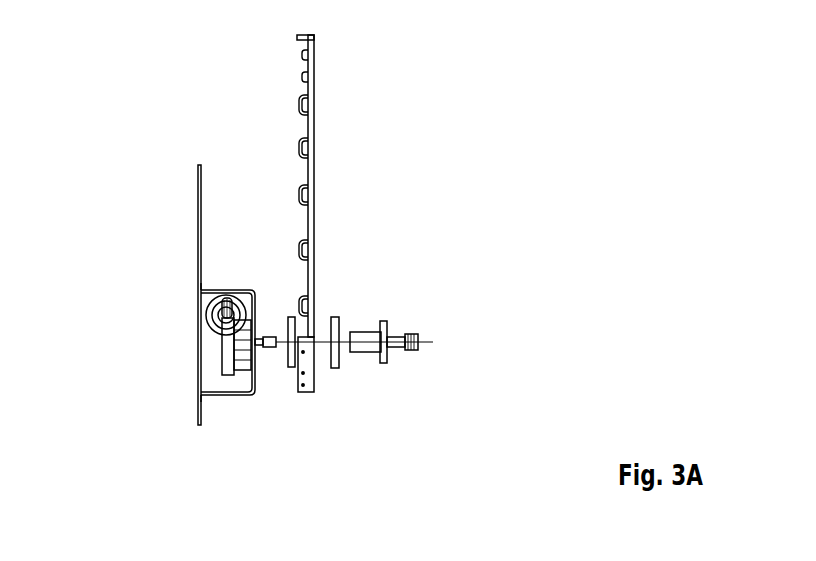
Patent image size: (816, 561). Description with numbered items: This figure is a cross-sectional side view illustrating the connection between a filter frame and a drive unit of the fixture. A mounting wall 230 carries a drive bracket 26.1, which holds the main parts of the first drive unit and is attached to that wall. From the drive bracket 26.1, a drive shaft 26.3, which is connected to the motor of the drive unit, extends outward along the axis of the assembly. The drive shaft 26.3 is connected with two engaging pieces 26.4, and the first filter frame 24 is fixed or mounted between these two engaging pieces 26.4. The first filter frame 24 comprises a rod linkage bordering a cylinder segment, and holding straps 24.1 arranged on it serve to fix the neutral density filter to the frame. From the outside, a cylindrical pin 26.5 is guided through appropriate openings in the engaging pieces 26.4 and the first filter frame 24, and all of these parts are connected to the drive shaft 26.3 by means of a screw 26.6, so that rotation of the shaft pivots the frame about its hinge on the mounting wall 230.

The mounting wall 230 is at (198, 208).
The first filter frame 24 is at (314, 127).
The holding straps 24.1 is at (305, 193).
The drive bracket 26.1 is at (227, 396).
The drive shaft 26.3 is at (268, 348).
The engaging pieces 26.4 is at (291, 368).
The cylindrical pin 26.5 is at (372, 352).
The screw 26.6 is at (402, 350).